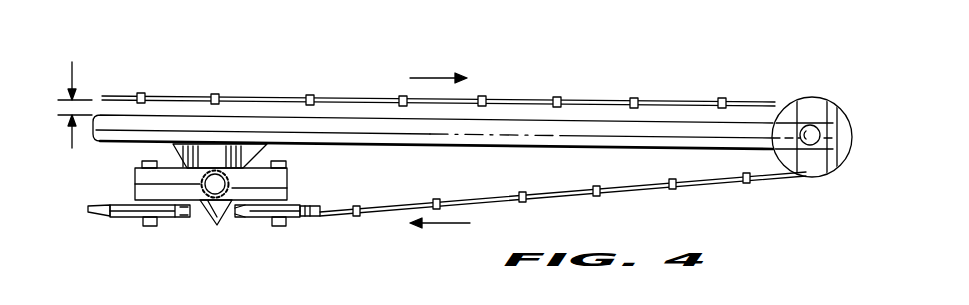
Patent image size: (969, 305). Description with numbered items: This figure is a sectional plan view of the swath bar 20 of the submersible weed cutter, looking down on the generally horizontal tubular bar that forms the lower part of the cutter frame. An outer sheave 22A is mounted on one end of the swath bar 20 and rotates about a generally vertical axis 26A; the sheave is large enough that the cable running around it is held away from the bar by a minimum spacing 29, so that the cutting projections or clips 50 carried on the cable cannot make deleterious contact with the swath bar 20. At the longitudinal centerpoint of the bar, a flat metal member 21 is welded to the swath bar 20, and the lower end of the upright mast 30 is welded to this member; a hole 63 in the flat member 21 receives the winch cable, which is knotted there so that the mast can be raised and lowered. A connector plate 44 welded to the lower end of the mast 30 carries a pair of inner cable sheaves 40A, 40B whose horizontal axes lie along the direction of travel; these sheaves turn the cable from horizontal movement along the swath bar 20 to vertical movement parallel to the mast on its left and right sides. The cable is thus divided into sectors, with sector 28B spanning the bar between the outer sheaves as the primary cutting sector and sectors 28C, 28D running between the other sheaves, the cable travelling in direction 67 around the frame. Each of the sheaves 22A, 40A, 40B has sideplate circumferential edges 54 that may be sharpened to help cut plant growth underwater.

The swath bar 20 is at (578, 134).
The flat metal member 21 is at (243, 164).
The outer sheave 22A is at (810, 166).
The vertical axis 26A is at (810, 125).
The cable sector 28B is at (95, 214).
The cable sector 28C is at (185, 96).
The cable sector 28D is at (627, 194).
The minimum spacing 29 is at (72, 78).
The upright mast 30 is at (287, 174).
The inner cable sheave 40A is at (297, 222).
The inner cable sheave 40B is at (130, 222).
The connector plate 44 is at (278, 190).
The cutting projections or clips 50 is at (215, 94).
The sideplate circumferential edges 54 is at (315, 216).
The hole 63 is at (218, 224).
The direction of cable travel 67 is at (432, 78).